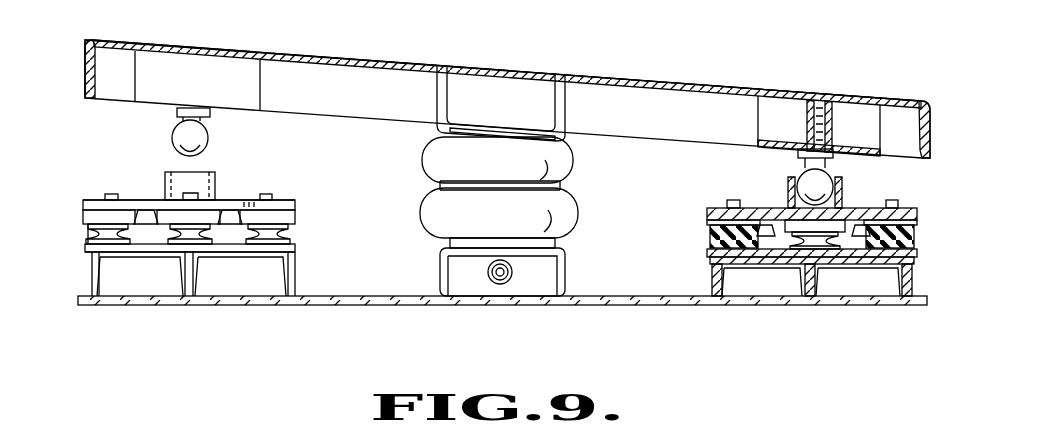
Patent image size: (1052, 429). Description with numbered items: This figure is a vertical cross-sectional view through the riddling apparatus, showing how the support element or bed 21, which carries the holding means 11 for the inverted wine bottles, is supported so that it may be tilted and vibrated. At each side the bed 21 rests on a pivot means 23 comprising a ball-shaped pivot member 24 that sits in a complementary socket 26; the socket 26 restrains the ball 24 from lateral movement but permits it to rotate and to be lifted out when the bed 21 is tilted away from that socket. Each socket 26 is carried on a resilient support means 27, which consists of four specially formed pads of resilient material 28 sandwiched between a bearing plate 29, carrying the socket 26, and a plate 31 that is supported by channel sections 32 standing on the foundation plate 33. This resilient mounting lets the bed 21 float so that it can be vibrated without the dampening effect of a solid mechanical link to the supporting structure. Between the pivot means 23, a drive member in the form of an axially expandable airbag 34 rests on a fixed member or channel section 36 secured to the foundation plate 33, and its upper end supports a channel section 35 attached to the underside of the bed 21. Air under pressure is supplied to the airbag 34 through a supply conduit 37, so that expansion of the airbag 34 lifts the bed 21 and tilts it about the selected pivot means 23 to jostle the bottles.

The holding means 11 is at (690, 84).
The support element or bed 21 is at (345, 58).
The pivot means 23 is at (310, 222).
The pivot member 24 is at (209, 141).
The socket 26 is at (216, 178).
The resilient support means 27 is at (88, 234).
The pads of resilient material 28 is at (297, 235).
The bearing plate 29 is at (293, 202).
The plate 31 is at (297, 253).
The channel sections 32 is at (280, 289).
The foundation plate 33 is at (355, 306).
The drive members (airbags) 34 is at (578, 206).
The channel sections 35 is at (566, 112).
The fixed member / channel sections 36 is at (566, 281).
The supply conduits 37 is at (503, 284).